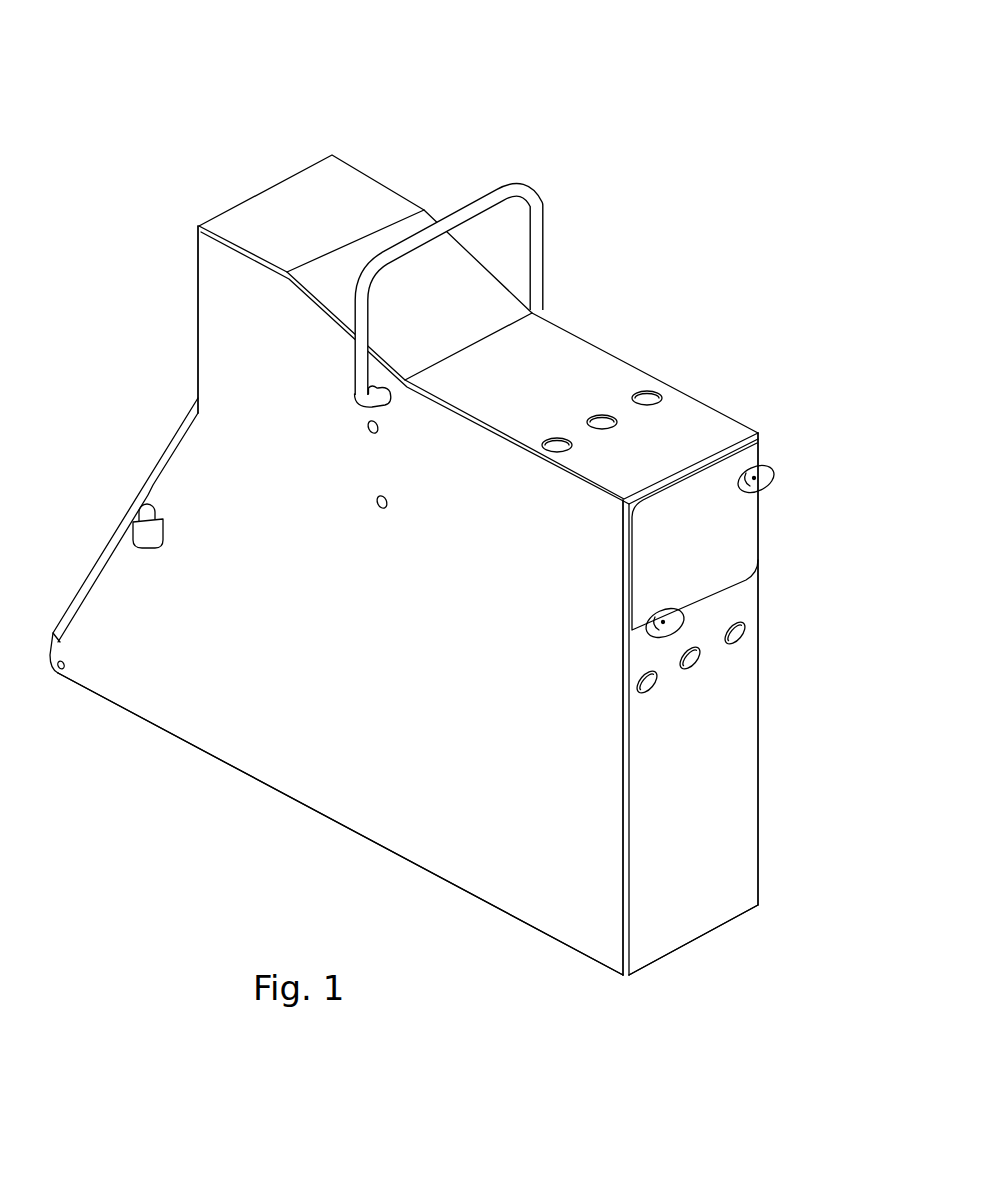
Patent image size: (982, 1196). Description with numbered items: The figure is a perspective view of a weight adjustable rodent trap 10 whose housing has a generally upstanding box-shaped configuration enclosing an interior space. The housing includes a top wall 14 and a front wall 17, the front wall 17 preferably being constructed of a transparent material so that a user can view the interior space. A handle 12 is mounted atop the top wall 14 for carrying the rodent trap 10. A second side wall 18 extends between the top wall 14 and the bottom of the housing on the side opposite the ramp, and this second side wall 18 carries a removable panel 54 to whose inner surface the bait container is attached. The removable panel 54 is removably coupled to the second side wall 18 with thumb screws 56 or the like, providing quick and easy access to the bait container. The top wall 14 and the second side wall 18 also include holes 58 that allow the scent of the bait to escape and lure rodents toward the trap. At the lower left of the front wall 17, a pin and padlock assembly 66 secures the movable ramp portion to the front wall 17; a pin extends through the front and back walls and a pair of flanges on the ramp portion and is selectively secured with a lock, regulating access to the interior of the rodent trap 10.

The rodent trap 10 is at (444, 503).
The handle 12 is at (537, 213).
The top wall 14 is at (581, 364).
The front wall 17 is at (436, 727).
The second side wall 18 is at (730, 704).
The removable panel 54 is at (735, 528).
The thumb screws 56 is at (772, 480).
The holes 58 is at (647, 390).
The pin and padlock assembly 66 is at (182, 539).